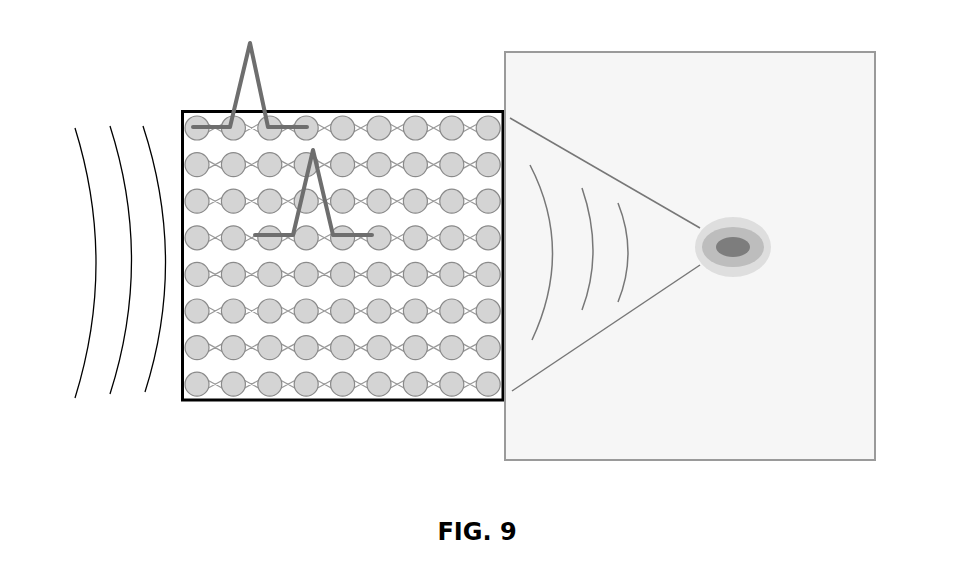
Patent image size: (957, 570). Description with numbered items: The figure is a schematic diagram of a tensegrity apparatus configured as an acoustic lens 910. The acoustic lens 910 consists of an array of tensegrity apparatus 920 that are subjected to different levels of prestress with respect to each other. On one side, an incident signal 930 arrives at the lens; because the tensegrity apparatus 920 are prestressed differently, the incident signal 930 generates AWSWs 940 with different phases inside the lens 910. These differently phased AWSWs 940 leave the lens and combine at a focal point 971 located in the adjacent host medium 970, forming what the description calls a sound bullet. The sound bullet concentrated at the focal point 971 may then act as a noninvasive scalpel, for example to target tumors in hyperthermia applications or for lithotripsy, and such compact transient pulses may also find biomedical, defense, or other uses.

The acoustic lens 910 is at (270, 400).
The array of tensegrity apparatus 920 is at (325, 390).
The incident signal 930 is at (97, 98).
The AWSWs 940 is at (256, 44).
The host medium 970 is at (663, 459).
The focal point 971 is at (747, 270).